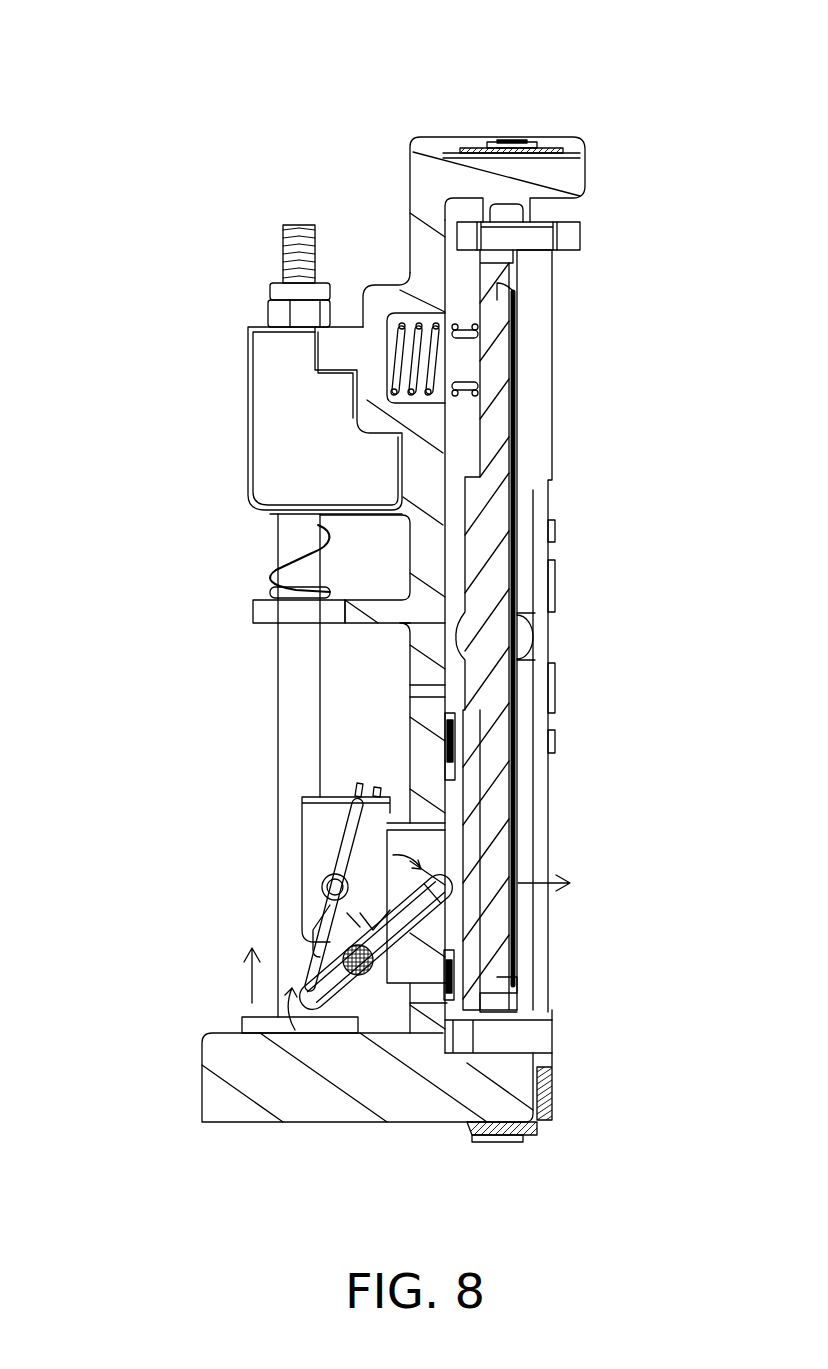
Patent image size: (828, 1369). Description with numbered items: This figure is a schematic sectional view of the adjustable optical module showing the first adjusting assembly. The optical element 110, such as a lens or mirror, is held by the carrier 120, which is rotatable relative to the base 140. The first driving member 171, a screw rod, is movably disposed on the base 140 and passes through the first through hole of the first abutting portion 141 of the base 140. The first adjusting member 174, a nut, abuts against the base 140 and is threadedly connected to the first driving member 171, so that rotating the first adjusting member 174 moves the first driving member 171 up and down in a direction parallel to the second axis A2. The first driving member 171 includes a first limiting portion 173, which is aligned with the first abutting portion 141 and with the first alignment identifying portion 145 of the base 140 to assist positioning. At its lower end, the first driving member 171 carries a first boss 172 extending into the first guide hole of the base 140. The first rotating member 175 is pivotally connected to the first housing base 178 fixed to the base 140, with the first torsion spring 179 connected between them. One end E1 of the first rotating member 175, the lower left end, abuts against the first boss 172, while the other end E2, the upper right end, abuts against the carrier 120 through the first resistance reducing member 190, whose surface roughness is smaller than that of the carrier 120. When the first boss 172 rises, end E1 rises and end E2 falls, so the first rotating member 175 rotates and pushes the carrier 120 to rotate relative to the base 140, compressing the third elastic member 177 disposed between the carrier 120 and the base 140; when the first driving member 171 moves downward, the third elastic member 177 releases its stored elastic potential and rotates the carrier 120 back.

The optical element 110 is at (505, 957).
The carrier 120 is at (487, 842).
The base 140 is at (215, 1090).
The first abutting portion 141 is at (270, 435).
The first alignment identifying portion 145 is at (300, 552).
The first driving member 171 is at (298, 677).
The first boss 172 is at (247, 1028).
The first limiting portion 173 is at (265, 608).
The first adjusting member 174 is at (280, 312).
The first rotating member 175 is at (334, 1002).
The third elastic member 177 is at (408, 328).
The first housing base 178 is at (305, 795).
The first torsion spring 179 is at (352, 868).
The first resistance reducing member 190 is at (453, 947).
The end of the first rotating member E1 is at (308, 1003).
The other end of the first rotating member E2 is at (445, 878).
The second axis A2 is at (511, 140).